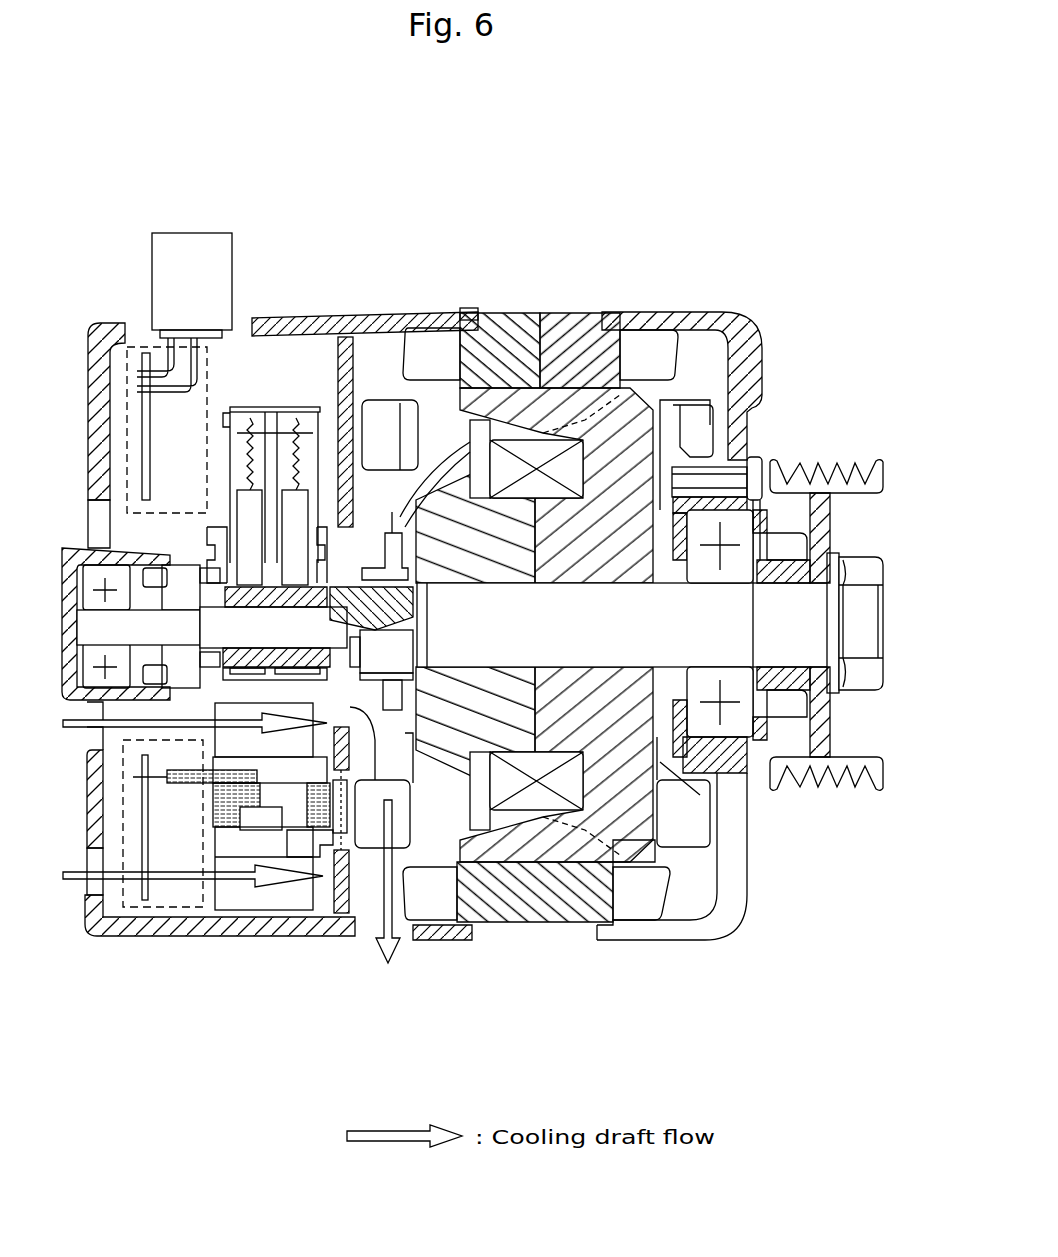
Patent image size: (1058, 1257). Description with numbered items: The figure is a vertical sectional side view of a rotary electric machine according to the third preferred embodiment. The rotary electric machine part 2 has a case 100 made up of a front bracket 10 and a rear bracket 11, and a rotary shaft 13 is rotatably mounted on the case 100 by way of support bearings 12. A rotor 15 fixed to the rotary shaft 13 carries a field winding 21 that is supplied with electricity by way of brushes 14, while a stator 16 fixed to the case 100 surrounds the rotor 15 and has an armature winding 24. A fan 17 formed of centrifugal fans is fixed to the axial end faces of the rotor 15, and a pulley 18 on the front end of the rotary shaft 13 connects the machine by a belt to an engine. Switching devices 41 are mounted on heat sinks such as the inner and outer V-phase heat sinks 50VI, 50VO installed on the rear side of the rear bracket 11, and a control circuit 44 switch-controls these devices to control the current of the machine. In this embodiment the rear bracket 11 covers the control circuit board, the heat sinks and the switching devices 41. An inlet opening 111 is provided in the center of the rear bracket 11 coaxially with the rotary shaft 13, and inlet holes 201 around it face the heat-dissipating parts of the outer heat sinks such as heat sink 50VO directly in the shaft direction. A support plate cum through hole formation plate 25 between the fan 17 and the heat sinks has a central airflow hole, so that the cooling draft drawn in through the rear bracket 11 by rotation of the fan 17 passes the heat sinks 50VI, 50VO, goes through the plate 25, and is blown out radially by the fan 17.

The rotary electric machine part 2 is at (513, 313).
The front bracket 10 is at (650, 317).
The rear bracket 11 is at (280, 317).
The support bearings 12 is at (747, 723).
The rotary shaft 13 is at (822, 590).
The brushes 14 is at (237, 407).
The rotor 15 is at (623, 843).
The stator 16 is at (523, 935).
The fan 17 is at (382, 403).
The pulley 18 is at (820, 460).
The field winding 21 is at (545, 450).
The armature winding 24 is at (432, 330).
The support plate cum through hole formation plate 25 is at (340, 330).
The switching devices 41 is at (286, 780).
The control circuit 44 is at (143, 840).
The heat sink 50VI is at (237, 730).
The heat sink 50VO is at (230, 897).
The case 100 is at (475, 317).
The inlet opening 111 is at (93, 750).
The inlet holes 201 is at (92, 900).